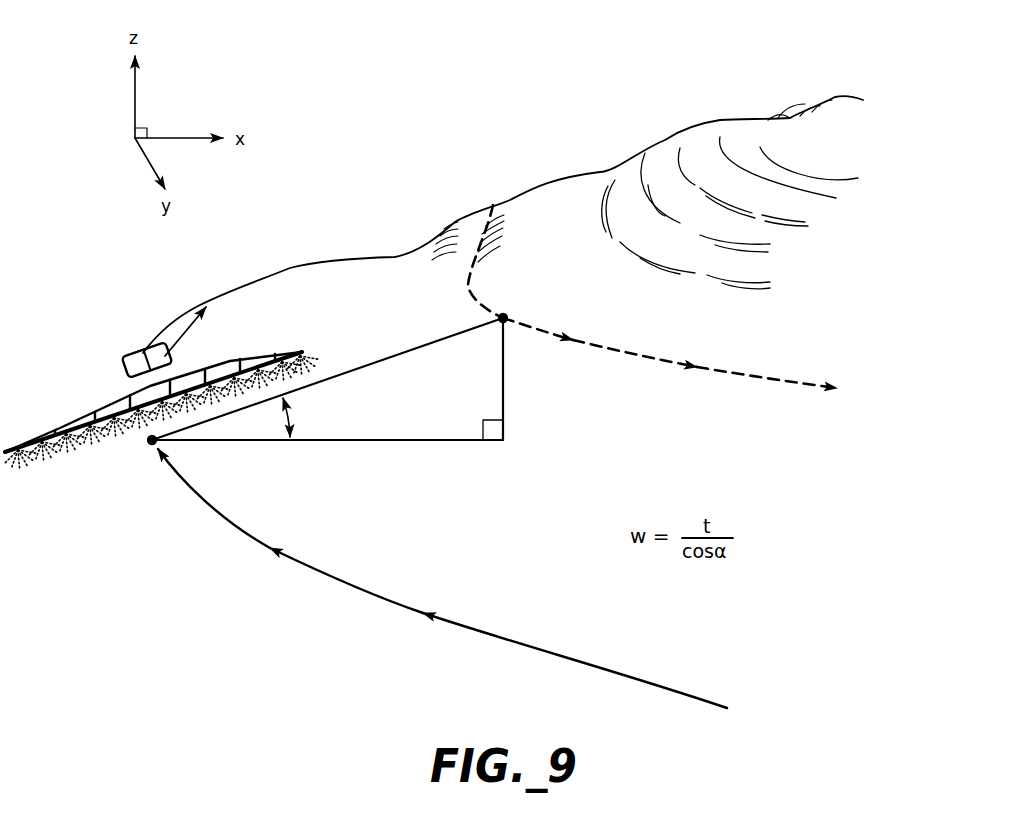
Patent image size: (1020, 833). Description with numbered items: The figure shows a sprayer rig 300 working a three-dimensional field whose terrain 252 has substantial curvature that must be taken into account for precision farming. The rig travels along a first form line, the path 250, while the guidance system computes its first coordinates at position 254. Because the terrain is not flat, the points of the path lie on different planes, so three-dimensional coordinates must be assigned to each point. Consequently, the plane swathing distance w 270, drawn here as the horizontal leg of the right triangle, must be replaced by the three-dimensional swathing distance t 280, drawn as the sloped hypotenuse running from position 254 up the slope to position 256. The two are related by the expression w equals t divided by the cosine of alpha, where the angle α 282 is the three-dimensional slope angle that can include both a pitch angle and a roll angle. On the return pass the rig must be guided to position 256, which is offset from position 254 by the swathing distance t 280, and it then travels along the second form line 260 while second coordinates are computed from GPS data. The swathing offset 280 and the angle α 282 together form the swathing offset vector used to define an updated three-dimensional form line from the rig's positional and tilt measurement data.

The path 250 is at (338, 584).
The terrain 252 is at (662, 132).
The position 254 is at (154, 456).
The position 256 is at (503, 314).
The second form line 260 is at (722, 373).
The plane swathing distance w 270 is at (392, 415).
The 3-dimensional swathing distance t 280 is at (375, 332).
The angle α 282 is at (285, 433).
The sprayer vehicle 300 is at (214, 642).